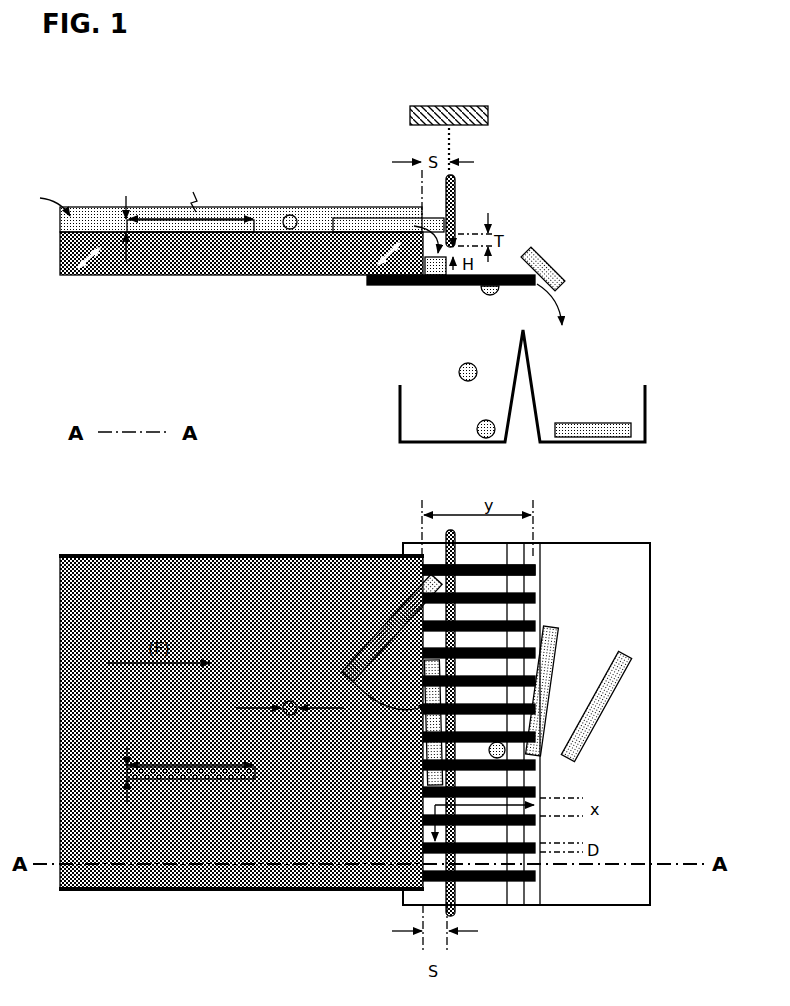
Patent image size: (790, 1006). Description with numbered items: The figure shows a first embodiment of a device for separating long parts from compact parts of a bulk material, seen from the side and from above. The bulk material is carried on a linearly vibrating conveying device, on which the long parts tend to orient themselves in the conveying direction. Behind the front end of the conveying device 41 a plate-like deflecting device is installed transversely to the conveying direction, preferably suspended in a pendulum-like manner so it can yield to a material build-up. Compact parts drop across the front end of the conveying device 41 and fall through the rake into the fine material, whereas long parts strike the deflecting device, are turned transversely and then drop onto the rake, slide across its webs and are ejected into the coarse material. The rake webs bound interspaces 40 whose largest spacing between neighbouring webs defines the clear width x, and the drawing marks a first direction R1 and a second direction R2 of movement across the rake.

The interspaces of rake webs 40 is at (481, 724).
The front end of conveying device 41 is at (392, 638).
The first direction R1 is at (480, 805).
The second direction R2 is at (428, 831).